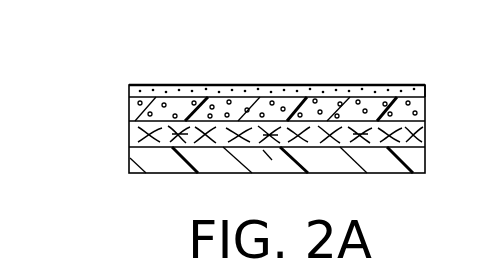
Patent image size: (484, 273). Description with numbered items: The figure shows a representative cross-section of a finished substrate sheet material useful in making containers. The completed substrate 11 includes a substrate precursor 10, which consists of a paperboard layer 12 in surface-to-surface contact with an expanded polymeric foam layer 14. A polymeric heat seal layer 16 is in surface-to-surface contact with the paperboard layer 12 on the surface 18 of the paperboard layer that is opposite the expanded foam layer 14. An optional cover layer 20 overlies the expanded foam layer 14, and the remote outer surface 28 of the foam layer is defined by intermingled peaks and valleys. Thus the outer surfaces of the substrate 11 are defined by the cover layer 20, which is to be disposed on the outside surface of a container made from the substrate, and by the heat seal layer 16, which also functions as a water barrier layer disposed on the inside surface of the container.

The substrate precursor 10 is at (119, 99).
The completed substrate 11 is at (295, 80).
The paperboard layer 12 is at (427, 133).
The expanded polymeric foam layer 14 is at (427, 107).
The polymeric heat seal layer 16 is at (154, 176).
The surface of the paperboard layer 18 is at (267, 148).
The cover layer 20 is at (425, 88).
The remote outer surface 28 is at (180, 86).